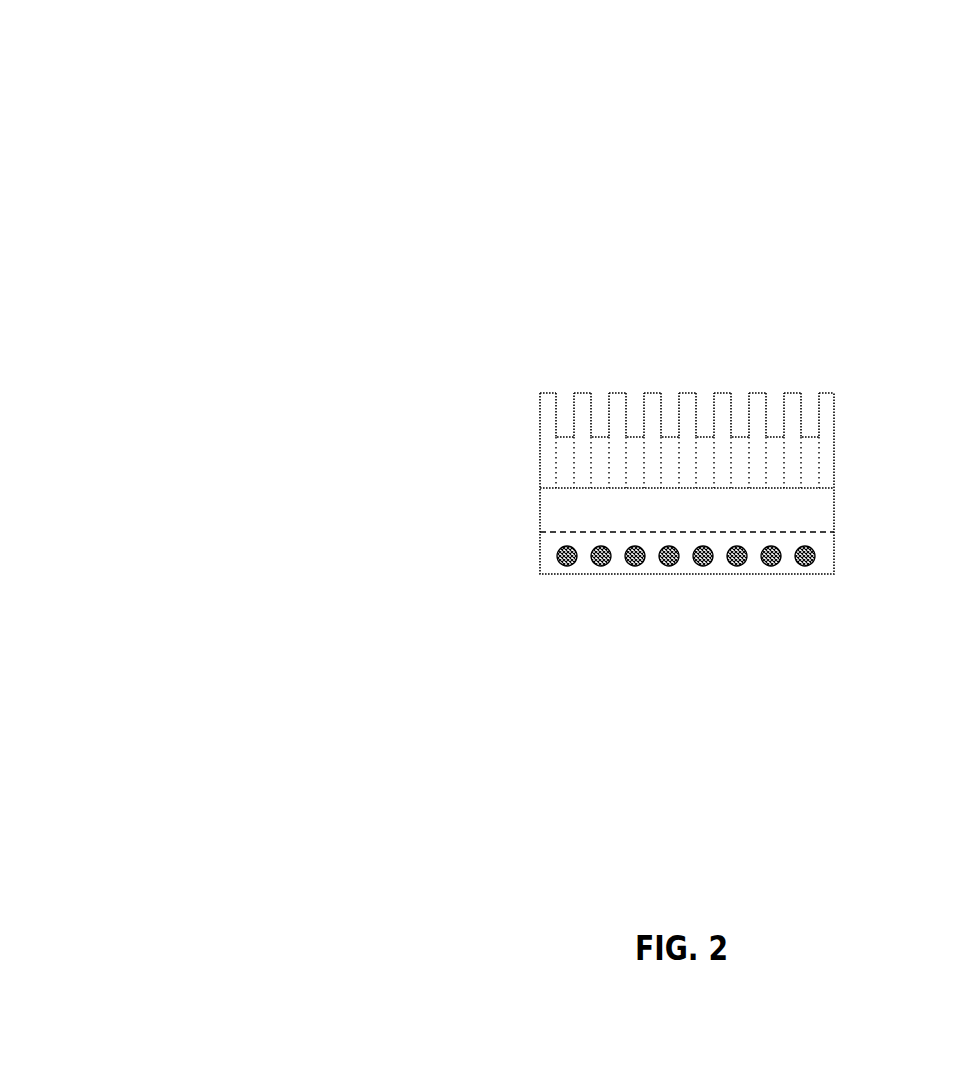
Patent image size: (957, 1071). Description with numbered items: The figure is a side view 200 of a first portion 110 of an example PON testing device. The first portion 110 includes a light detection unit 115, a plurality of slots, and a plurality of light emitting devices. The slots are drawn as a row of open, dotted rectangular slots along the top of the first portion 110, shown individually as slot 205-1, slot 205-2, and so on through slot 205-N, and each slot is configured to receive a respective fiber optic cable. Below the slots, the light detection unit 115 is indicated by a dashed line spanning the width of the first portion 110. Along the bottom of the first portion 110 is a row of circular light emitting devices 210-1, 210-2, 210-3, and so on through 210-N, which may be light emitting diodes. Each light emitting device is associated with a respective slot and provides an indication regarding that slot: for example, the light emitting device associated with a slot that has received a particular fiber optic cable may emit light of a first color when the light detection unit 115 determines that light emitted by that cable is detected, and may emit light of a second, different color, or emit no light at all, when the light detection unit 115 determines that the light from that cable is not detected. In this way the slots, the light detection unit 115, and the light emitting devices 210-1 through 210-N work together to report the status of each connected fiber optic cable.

The side view 200 is at (195, 66).
The first portion 110 is at (457, 241).
The slot 205-1 is at (563, 397).
The slot 205-2 is at (600, 427).
The slot 205-N is at (807, 420).
The light detection unit 115 is at (813, 522).
The light emitting device 210-1 is at (567, 566).
The light emitting device 210-2 is at (601, 566).
The light emitting device 210-3 is at (635, 566).
The light emitting device 210-N is at (805, 566).